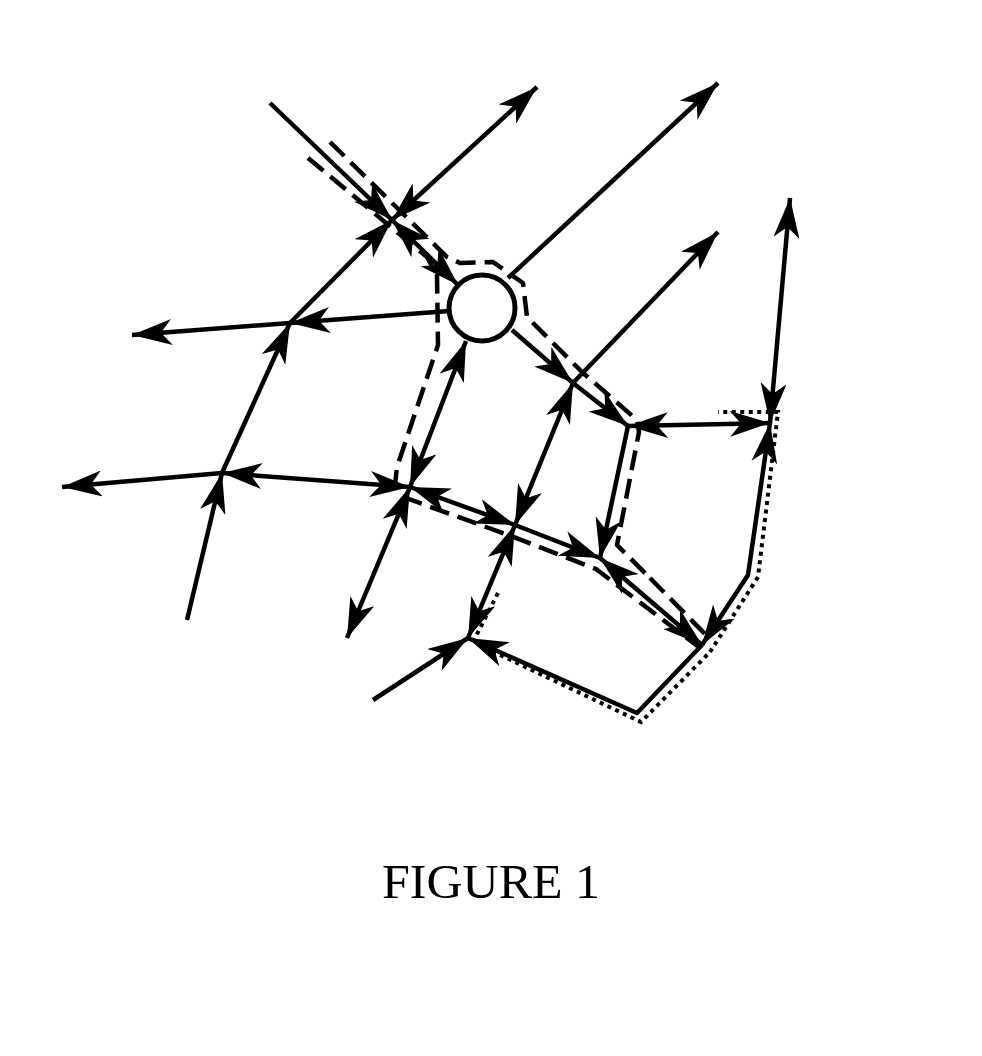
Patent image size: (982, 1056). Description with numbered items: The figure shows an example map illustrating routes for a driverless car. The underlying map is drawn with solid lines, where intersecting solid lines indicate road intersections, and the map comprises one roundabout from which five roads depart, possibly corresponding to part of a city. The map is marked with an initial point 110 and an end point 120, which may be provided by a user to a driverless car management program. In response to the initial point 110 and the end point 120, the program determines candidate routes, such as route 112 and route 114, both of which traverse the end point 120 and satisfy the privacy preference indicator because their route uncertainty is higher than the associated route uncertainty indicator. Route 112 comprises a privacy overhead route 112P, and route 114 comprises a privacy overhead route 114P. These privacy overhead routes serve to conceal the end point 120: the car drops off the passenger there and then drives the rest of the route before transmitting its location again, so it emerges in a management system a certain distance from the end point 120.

The initial point 110 is at (320, 140).
The route 112 is at (326, 175).
The route 114 is at (363, 167).
The end point 120 is at (678, 614).
The privacy overhead route 112P is at (680, 683).
The privacy overhead route 114P is at (750, 592).